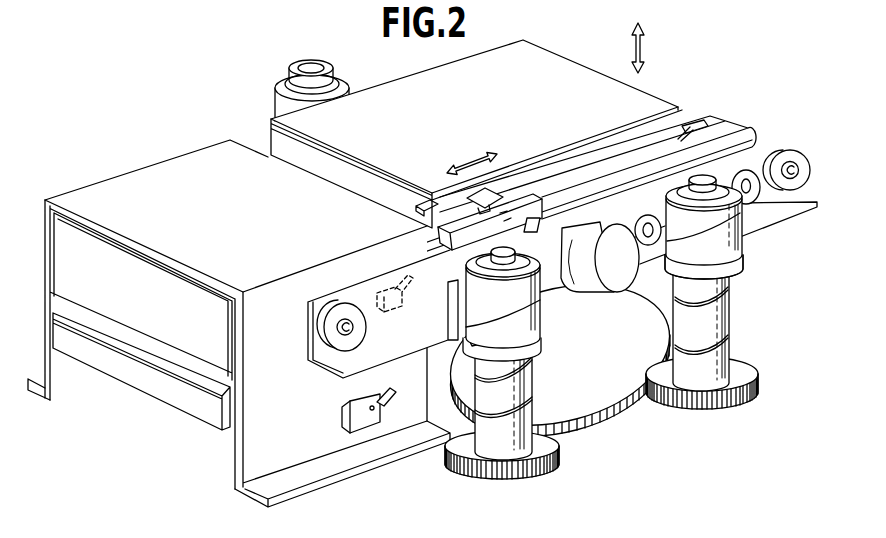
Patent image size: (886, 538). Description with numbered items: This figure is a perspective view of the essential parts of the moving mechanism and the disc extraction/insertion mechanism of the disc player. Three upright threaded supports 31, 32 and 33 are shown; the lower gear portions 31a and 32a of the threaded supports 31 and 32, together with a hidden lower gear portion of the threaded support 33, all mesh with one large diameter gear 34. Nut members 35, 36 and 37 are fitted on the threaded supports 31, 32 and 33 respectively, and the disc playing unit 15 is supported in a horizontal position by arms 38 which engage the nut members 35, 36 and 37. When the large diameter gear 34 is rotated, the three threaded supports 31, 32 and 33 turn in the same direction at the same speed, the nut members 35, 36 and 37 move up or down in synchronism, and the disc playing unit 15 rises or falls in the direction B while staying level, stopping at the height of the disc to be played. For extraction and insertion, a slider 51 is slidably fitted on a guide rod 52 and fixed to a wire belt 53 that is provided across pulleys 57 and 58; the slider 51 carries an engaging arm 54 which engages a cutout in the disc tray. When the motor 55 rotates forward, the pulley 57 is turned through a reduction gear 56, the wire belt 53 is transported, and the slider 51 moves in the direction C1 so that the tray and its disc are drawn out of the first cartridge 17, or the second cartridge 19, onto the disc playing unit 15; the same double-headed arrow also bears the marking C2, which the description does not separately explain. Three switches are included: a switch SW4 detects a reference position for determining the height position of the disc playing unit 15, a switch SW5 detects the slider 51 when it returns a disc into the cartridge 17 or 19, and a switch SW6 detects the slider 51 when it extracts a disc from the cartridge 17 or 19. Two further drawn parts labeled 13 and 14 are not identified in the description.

The housing 13 is at (142, 173).
The side wall 14 is at (237, 438).
The disc playing unit 15 is at (585, 72).
The first cartridge 17 is at (178, 268).
The second cartridge 19 is at (143, 390).
The threaded support 31 is at (528, 393).
The lower gear portion 31a is at (520, 475).
The threaded support 32 is at (733, 323).
The lower gear portion 32a is at (712, 410).
The threaded support 33 is at (302, 53).
The large diameter gear 34 is at (610, 392).
The nut member 35 is at (533, 310).
The nut member 36 is at (740, 246).
The nut member 37 is at (272, 100).
The arms 38 is at (470, 347).
The slider 51 is at (525, 197).
The guide rod 52 is at (383, 263).
The wire belt 53 is at (748, 153).
The engaging arm 54 is at (418, 206).
The motor 55 is at (611, 292).
The reduction gear 56 is at (777, 207).
The pulley 57 is at (802, 150).
The pulley 58 is at (330, 333).
The switch SW4 is at (365, 424).
The switch SW5 is at (378, 294).
The switch SW6 is at (690, 122).
The direction B is at (645, 48).
The direction C1 is at (472, 153).
The direction arrow C2 is at (436, 163).